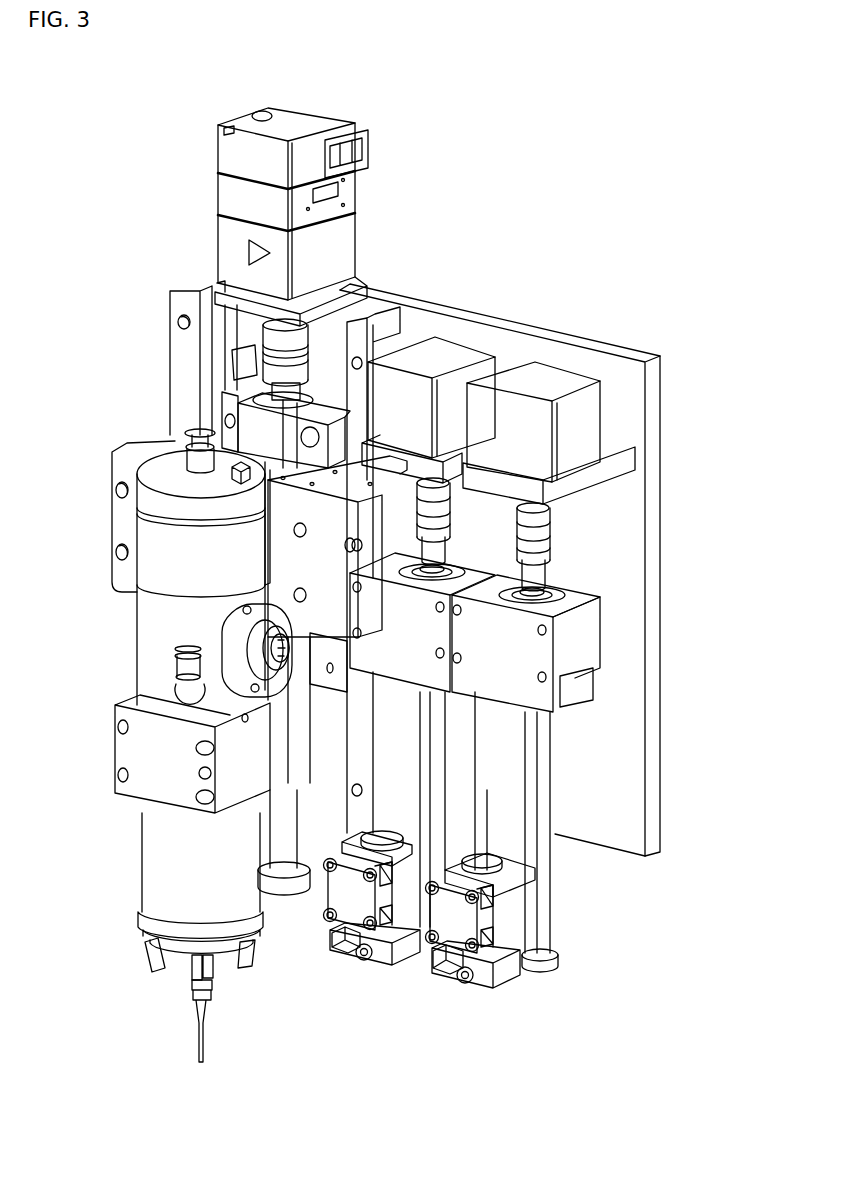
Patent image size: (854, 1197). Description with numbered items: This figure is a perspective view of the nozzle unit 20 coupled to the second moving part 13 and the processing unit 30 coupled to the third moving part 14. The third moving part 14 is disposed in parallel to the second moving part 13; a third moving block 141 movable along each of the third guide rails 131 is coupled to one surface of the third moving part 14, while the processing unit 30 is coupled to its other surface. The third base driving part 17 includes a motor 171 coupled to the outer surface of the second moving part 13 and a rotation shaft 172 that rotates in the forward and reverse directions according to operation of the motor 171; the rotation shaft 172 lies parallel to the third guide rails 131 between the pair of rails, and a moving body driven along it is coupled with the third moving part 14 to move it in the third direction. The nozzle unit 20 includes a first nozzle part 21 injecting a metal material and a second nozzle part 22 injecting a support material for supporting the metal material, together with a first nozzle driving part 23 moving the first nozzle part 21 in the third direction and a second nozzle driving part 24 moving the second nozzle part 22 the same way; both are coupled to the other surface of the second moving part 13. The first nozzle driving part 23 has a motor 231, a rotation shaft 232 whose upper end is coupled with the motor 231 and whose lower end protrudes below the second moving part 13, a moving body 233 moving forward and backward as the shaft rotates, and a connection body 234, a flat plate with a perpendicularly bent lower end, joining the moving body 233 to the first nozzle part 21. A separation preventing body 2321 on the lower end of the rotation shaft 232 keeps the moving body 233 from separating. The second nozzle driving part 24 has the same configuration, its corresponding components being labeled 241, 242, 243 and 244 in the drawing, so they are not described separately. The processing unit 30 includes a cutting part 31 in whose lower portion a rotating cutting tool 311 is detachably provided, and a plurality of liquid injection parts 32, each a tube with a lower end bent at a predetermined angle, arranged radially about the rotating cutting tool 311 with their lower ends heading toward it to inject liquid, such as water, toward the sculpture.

The second moving part 13 is at (642, 360).
The third guide rails 131 is at (368, 315).
The third moving part 14 is at (122, 511).
The third moving block 141 is at (160, 447).
The third base driving part 17 is at (252, 288).
The motor 171 is at (222, 232).
The rotation shaft 172 is at (284, 878).
The nozzle unit 20 is at (530, 707).
The first nozzle part 21 is at (482, 973).
The second nozzle part 22 is at (371, 948).
The first nozzle driving part 23 is at (595, 632).
The motor 231 is at (588, 419).
The rotation shaft 232 is at (545, 924).
The separation preventing body 2321 is at (548, 959).
The moving body 233 is at (595, 646).
The connection body 234 is at (528, 800).
The second nozzle driving part 24 is at (534, 651).
The second motor 241 is at (472, 355).
The second slider 242 is at (426, 925).
The second moving block 243 is at (483, 573).
The fitting 244 is at (340, 948).
The processing unit 30 is at (340, 800).
The cutting part 31 is at (155, 858).
The rotating cutting tool 311 is at (198, 1042).
The liquid injection parts 32 is at (152, 968).